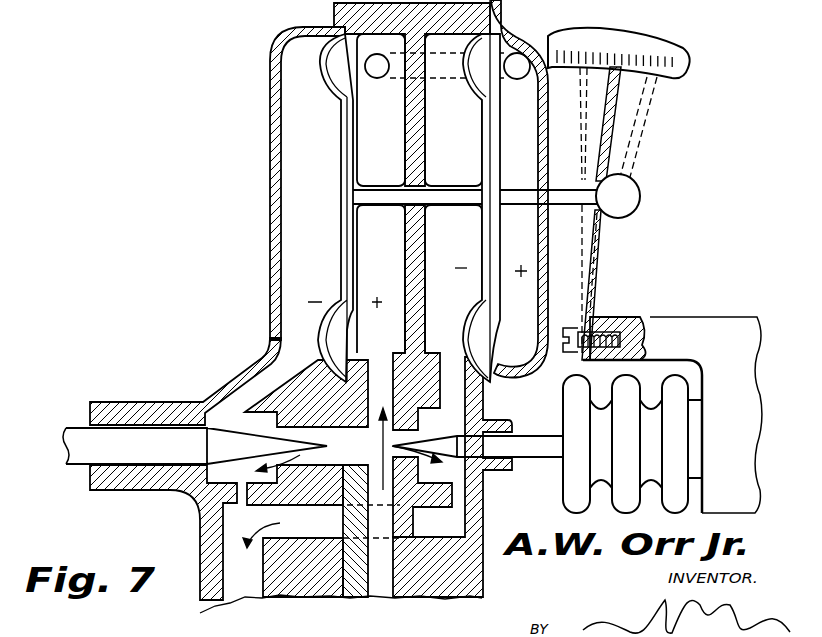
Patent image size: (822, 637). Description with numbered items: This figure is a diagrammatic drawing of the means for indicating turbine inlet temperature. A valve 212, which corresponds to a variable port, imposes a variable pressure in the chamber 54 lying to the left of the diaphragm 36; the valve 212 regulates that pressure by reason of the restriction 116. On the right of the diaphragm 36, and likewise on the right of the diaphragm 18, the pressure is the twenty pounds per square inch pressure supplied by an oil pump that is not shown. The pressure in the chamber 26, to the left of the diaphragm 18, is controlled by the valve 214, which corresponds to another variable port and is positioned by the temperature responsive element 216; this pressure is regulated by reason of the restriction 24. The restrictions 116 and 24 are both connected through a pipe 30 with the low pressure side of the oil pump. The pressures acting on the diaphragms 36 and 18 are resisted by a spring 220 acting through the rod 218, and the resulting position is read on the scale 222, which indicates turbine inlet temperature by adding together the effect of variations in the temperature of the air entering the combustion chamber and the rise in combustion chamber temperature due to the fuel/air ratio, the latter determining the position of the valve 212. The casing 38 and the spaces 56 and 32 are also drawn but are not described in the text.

The casing 38 is at (319, 306).
The chamber 54 is at (323, 146).
The inner chamber 56 is at (395, 109).
The chamber 26 is at (465, 126).
The chamber 32 is at (529, 128).
The diaphragm 36 is at (330, 83).
The diaphragm 18 is at (478, 306).
The rod 218 is at (467, 206).
The scale 222 is at (682, 60).
The spring 220 is at (615, 124).
The valve 212 is at (262, 458).
The valve 214 is at (522, 433).
The temperature responsive element 216 is at (563, 483).
The restriction 24 is at (468, 510).
The restriction 116 is at (222, 520).
The pipe 30 is at (255, 580).